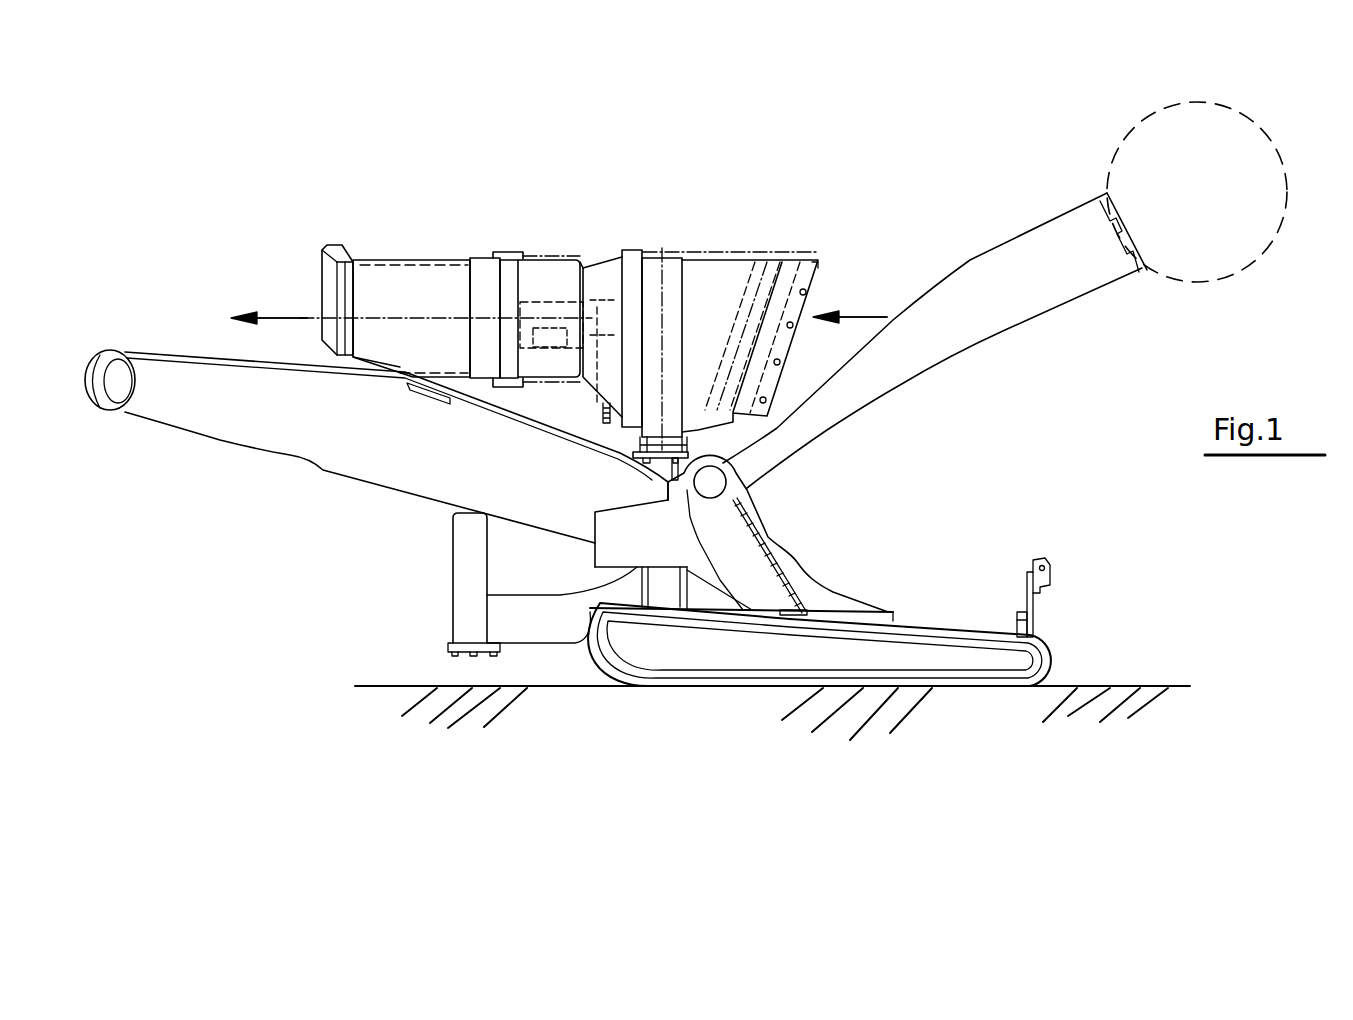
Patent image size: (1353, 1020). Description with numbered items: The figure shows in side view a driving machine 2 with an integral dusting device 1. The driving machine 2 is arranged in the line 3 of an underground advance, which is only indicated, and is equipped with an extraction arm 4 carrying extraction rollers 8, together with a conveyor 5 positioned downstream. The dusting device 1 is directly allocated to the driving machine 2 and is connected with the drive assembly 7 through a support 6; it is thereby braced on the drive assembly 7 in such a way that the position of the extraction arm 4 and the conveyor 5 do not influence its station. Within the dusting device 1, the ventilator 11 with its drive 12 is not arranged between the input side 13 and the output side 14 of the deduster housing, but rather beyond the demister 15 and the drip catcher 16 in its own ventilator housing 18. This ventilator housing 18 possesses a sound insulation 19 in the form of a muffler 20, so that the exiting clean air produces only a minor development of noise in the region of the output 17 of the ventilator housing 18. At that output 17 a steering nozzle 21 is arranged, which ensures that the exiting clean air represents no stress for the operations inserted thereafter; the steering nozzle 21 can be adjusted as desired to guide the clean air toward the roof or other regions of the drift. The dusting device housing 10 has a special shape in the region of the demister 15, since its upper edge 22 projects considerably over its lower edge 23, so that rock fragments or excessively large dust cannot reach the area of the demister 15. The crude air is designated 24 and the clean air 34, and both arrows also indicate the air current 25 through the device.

The dusting device 1 is at (498, 166).
The driving machine 2 is at (285, 616).
The line 3 is at (1128, 728).
The extraction arm 4 is at (1062, 282).
The conveyor 5 is at (292, 425).
The support 6 is at (667, 592).
The drive assembly 7 is at (887, 657).
The extraction rollers 8 is at (1255, 233).
The dusting device housing 10 is at (783, 303).
The ventilator 11 is at (590, 320).
The drive 12 is at (572, 300).
The input side 13 is at (805, 292).
The output side 14 is at (620, 285).
The demister 15 is at (762, 297).
The drip catcher 16 is at (665, 302).
The output 17 is at (328, 290).
The ventilator housing 18 is at (508, 258).
The sound insulation 19 is at (446, 276).
The muffler 20 is at (401, 290).
The steering nozzle 21 is at (290, 265).
The upper edge 22 is at (818, 262).
The lower edge 23 is at (752, 407).
The crude air 24 is at (847, 322).
The air current 25 is at (566, 317).
The clean air 34 is at (255, 308).